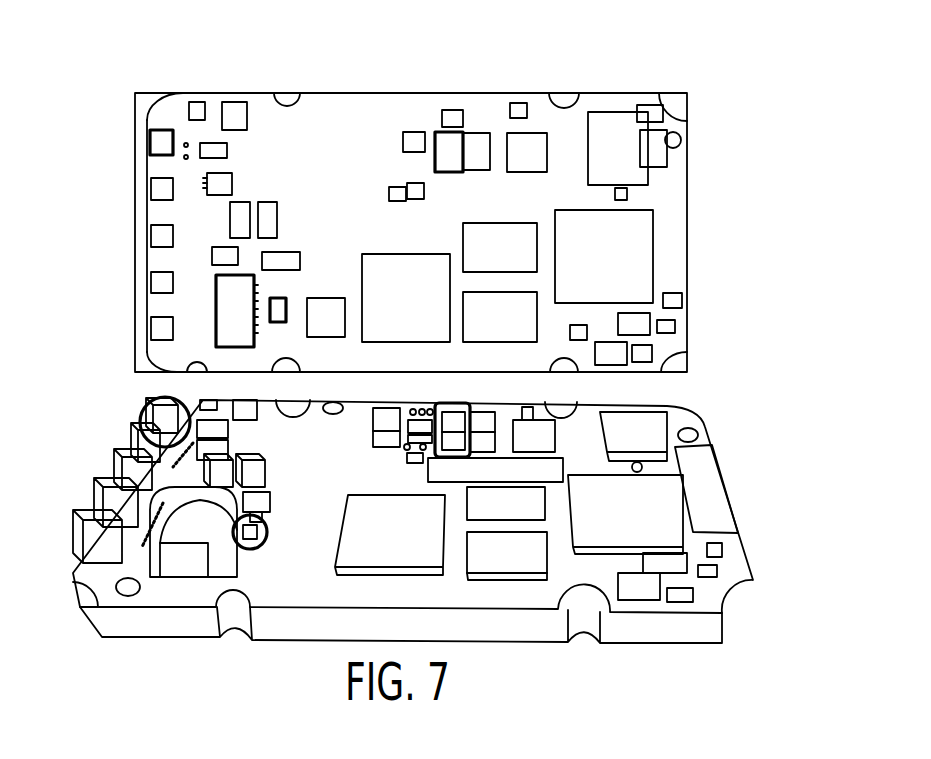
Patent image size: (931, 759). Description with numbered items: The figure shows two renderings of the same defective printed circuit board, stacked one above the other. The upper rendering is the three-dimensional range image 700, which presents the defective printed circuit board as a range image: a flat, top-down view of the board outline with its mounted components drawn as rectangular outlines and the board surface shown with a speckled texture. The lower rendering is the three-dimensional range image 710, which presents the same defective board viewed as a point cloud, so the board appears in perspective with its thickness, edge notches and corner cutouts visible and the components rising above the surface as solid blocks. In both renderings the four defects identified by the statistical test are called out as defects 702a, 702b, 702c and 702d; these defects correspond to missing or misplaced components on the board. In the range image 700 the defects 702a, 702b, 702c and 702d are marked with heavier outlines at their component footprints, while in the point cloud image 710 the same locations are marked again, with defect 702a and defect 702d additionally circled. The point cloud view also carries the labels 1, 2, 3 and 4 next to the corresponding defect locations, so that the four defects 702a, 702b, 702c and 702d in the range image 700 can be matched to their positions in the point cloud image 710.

The 3D range image 700 is at (688, 172).
The 3D range image 710 is at (713, 476).
The defect 702a is at (161, 130).
The defect 702b is at (436, 134).
The defect 702c is at (216, 310).
The defect 702d is at (286, 307).
The first component location 1 is at (157, 418).
The second component location 2 is at (513, 413).
The third component location 3 is at (170, 503).
The fourth component location 4 is at (276, 522).